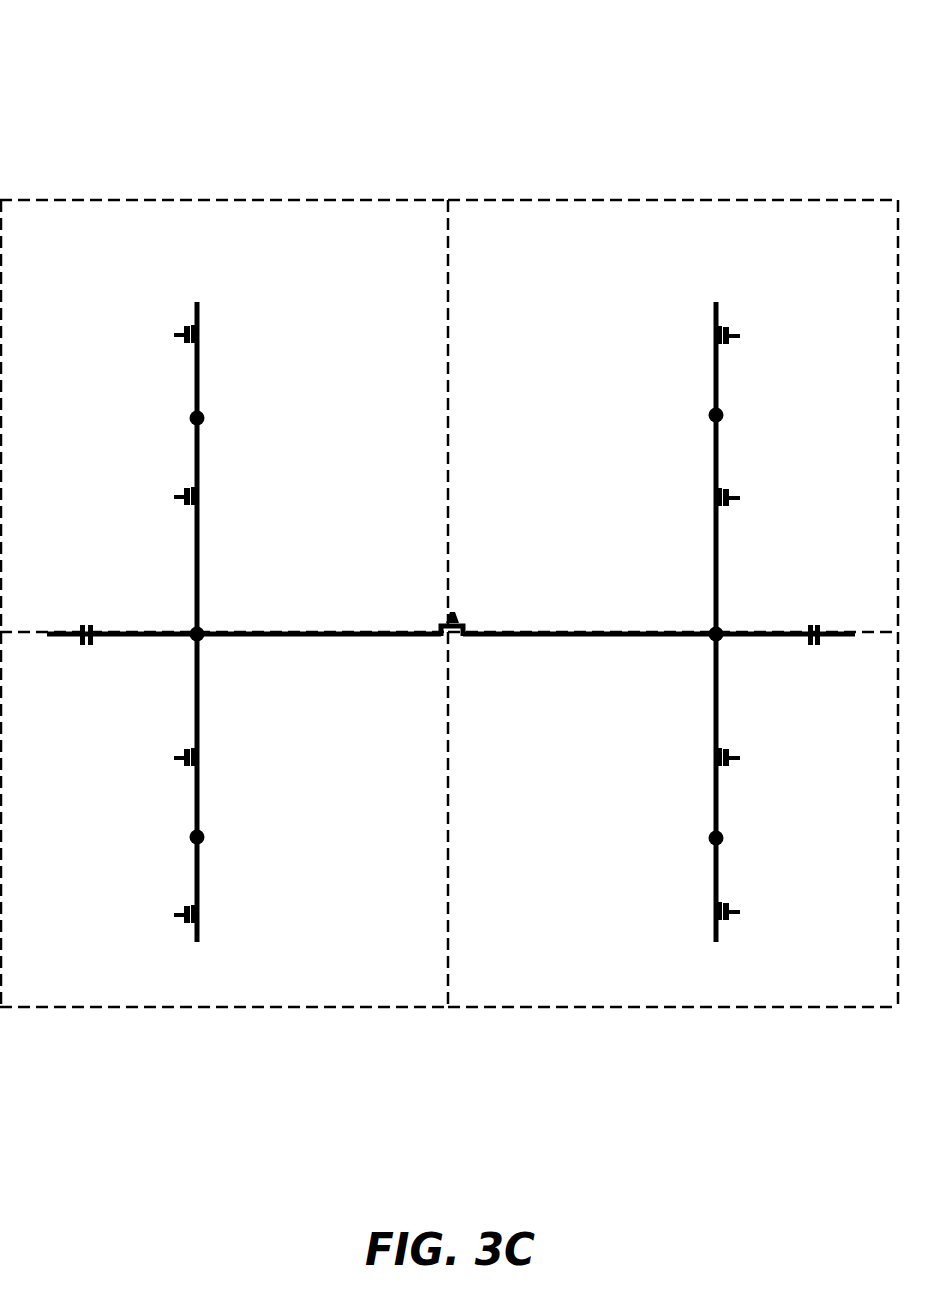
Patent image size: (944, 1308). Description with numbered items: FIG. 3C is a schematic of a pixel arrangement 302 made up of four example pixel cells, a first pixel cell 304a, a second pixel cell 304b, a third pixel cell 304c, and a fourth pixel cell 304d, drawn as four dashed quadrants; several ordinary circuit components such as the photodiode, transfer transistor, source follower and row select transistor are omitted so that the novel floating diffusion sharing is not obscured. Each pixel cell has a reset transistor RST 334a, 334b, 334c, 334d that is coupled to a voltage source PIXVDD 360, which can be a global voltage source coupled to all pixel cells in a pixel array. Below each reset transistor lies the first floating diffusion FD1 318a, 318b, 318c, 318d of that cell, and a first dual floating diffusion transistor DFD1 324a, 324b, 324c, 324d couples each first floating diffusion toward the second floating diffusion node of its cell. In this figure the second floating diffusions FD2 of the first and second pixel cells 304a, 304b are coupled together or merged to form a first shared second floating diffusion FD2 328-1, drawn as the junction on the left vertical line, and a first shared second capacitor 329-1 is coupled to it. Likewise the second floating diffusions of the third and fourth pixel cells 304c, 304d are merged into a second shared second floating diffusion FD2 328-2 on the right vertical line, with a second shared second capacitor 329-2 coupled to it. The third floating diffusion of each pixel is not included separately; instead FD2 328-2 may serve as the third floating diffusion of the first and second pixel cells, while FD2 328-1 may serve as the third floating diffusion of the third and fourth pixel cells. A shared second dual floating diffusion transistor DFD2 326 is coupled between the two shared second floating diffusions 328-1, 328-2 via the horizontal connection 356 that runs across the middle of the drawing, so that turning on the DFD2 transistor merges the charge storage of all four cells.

The pixel circuit 302 is at (174, 62).
The first pixel cell 304a is at (70, 242).
The second pixel cell 304b is at (70, 676).
The third pixel cell 304c is at (878, 242).
The fourth pixel cell 304d is at (878, 676).
The voltage source PIXVDD 360 is at (183, 276).
The reset transistor RST 334a is at (174, 338).
The reset transistor RST 334b is at (174, 915).
The reset transistor RST 334c is at (748, 336).
The reset transistor RST 334d is at (745, 912).
The first floating diffusion FD1 318a is at (191, 419).
The first floating diffusion FD1 318b is at (191, 838).
The first floating diffusion FD1 318c is at (726, 416).
The first floating diffusion FD1 318d is at (726, 838).
The first dual floating diffusion transistor DFD1 324a is at (174, 496).
The first dual floating diffusion transistor DFD1 324b is at (174, 754).
The first dual floating diffusion transistor DFD1 324c is at (748, 496).
The first dual floating diffusion transistor DFD1 324d is at (748, 754).
The shared second dual floating diffusion transistor DFD2 326 is at (434, 612).
The first shared second floating diffusion FD2 328-1 is at (188, 626).
The second shared second floating diffusion FD2 328-2 is at (724, 626).
The first shared second capacitor 329-1 is at (85, 622).
The second shared second capacitor 329-2 is at (818, 622).
The horizontal connection 356 is at (566, 637).